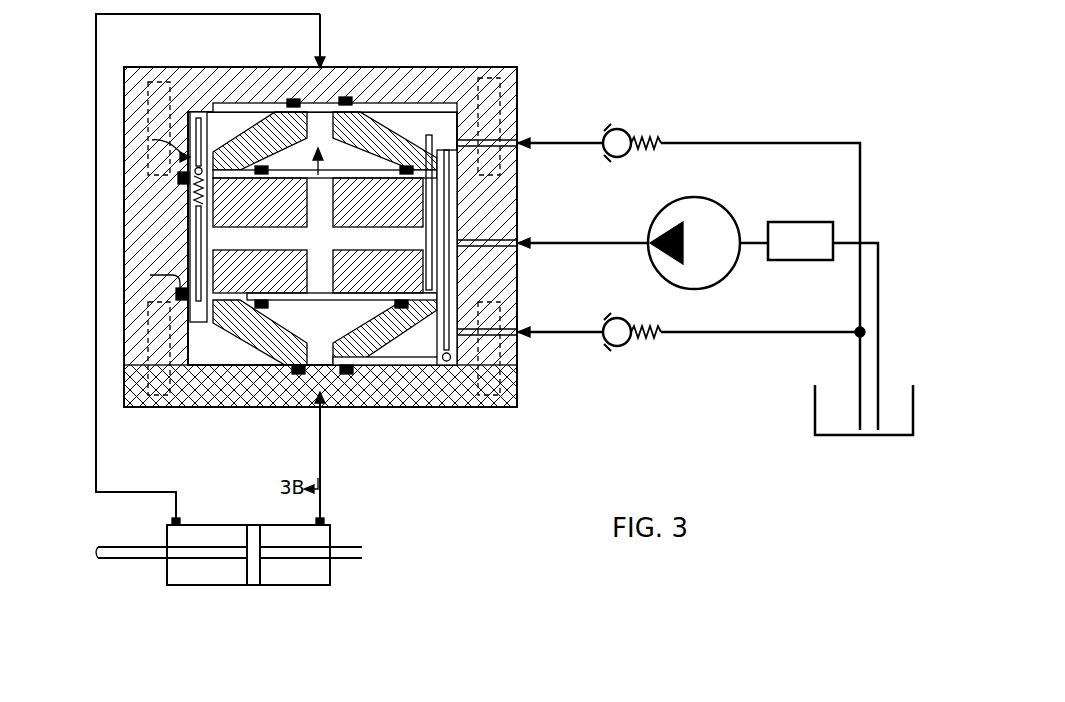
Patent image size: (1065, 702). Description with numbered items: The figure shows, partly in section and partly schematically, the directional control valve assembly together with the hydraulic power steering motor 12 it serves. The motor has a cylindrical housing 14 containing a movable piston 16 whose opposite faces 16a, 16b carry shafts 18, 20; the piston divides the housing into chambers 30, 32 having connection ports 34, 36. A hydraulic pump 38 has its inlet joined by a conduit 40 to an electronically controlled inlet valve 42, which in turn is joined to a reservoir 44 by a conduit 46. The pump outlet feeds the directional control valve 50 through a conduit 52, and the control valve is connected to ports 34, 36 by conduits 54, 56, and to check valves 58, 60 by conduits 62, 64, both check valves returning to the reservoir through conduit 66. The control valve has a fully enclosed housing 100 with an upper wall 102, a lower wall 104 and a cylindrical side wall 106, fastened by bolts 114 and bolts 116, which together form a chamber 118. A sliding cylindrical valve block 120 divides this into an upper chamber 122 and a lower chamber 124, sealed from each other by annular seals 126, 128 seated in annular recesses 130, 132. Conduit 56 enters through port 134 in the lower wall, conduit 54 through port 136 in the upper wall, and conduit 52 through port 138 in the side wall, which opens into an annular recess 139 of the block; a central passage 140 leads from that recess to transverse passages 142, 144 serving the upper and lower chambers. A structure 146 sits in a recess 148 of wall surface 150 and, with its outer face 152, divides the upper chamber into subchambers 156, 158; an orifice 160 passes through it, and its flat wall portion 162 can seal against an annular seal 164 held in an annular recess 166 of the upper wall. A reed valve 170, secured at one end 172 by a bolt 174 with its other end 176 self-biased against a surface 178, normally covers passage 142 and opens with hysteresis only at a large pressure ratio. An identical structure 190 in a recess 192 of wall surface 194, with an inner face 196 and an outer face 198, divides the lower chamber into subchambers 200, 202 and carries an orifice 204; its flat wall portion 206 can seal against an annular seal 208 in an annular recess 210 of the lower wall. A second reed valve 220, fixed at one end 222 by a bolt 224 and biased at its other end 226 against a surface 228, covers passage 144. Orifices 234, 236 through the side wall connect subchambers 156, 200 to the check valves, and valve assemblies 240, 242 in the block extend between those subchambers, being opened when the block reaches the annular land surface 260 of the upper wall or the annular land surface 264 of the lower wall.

The hydraulic power steering motor 12 is at (343, 640).
The cylindrical housing 14 is at (215, 586).
The piston 16 is at (258, 586).
The piston face 16a is at (250, 586).
The piston face 16b is at (282, 586).
The shaft 18 is at (115, 553).
The shaft 20 is at (358, 562).
The chamber 30 is at (174, 572).
The chamber 32 is at (332, 578).
The hydraulic connection port 34 is at (172, 521).
The hydraulic connection port 36 is at (324, 521).
The hydraulic pump 38 is at (726, 273).
The conduit 40 is at (748, 242).
The electronically controlled inlet valve 42 is at (830, 222).
The reservoir 44 is at (814, 394).
The conduit 46 is at (880, 358).
The directional control valve 50 is at (527, 58).
The conduit 52 is at (622, 242).
The conduit 54 is at (96, 485).
The conduit 56 is at (321, 491).
The check valve 58 is at (628, 152).
The check valve 60 is at (630, 344).
The conduit 62 is at (606, 153).
The conduit 64 is at (606, 345).
The conduit 66 is at (858, 358).
The housing 100 is at (386, 30).
The upper wall 102 is at (195, 70).
The lower wall 104 is at (466, 408).
The cylindrical side wall 106 is at (505, 176).
The bolts 114 is at (148, 80).
The bolts 116 is at (150, 398).
The chamber 118 is at (215, 100).
The valve block 120 is at (500, 193).
The upper chamber 122 is at (229, 103).
The lower chamber 124 is at (243, 407).
The annular seal 126 is at (190, 197).
The annular seal 128 is at (176, 290).
The annular recess 130 is at (178, 178).
The annular recess 132 is at (186, 300).
The port 134 is at (320, 152).
The port 136 is at (324, 45).
The port 138 is at (530, 244).
The annular recess 139 is at (470, 222).
The central passage 140 is at (470, 215).
The passage 142 is at (268, 231).
The passage 144 is at (322, 228).
The structure 146 is at (228, 100).
The recess 148 is at (447, 112).
The wall surface 150 is at (188, 140).
The outer face 152 is at (430, 108).
The subchamber 156 is at (470, 80).
The subchamber 158 is at (290, 112).
The orifice 160 is at (322, 172).
The flat wall portion 162 is at (378, 100).
The annular seal 164 is at (352, 99).
The annular recess 166 is at (293, 99).
The reed valve 170 is at (410, 172).
The end 172 is at (268, 171).
The bolt 174 is at (245, 136).
The end 176 is at (440, 195).
The surface 178 is at (392, 110).
The structure 190 is at (400, 405).
The recess 192 is at (215, 405).
The wall surface 194 is at (168, 340).
The inner face 196 is at (266, 405).
The outer face 198 is at (182, 405).
The subchamber 200 is at (425, 406).
The subchamber 202 is at (305, 405).
The orifice 204 is at (372, 324).
The flat wall portion 206 is at (380, 405).
The annular seal 208 is at (345, 405).
The annular recess 210 is at (297, 410).
The reed valve 220 is at (288, 300).
The end 222 is at (168, 257).
The bolt 224 is at (240, 334).
The end 226 is at (500, 268).
The surface 228 is at (340, 300).
The orifice 234 is at (527, 140).
The orifice 236 is at (527, 336).
The valve assembly 240 is at (178, 156).
The valve assembly 242 is at (500, 284).
The annular land surface 260 is at (188, 124).
The annular land surface 264 is at (452, 362).